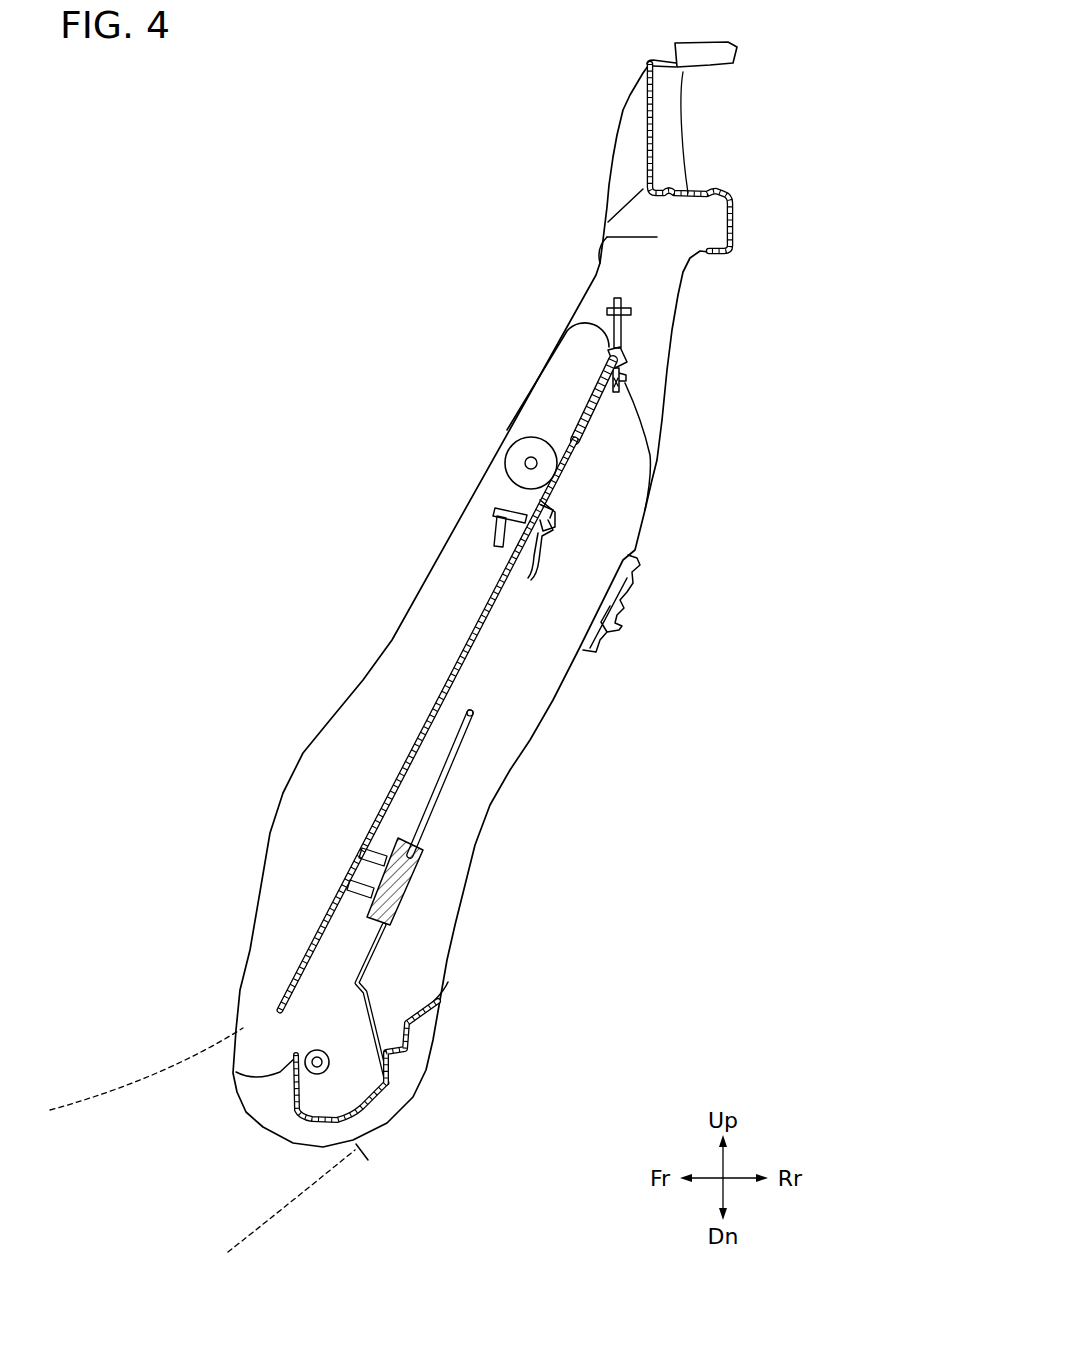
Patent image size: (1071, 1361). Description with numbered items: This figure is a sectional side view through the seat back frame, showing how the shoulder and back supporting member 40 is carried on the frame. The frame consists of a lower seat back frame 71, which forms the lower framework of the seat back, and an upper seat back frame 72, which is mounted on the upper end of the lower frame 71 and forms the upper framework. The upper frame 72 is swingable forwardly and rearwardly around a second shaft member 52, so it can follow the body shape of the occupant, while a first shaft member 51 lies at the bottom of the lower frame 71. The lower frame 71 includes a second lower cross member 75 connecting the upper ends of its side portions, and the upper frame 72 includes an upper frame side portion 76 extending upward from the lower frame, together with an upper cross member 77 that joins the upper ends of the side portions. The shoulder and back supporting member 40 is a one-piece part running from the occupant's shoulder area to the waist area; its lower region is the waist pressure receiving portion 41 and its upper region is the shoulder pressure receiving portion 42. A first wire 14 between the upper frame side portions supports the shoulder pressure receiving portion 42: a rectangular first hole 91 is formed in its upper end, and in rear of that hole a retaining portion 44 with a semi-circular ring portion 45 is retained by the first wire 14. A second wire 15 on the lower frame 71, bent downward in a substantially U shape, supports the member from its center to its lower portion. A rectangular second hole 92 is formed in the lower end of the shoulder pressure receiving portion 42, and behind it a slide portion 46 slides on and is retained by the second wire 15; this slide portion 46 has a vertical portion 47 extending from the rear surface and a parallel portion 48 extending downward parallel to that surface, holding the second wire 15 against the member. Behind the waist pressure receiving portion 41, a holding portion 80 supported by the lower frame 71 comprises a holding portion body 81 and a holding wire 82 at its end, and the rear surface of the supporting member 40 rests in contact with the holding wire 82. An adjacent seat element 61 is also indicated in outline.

The first wire 14 is at (623, 333).
The second wire 15 is at (493, 532).
The shoulder and back supporting member 40 is at (413, 671).
The waist pressure receiving portion 41 is at (380, 763).
The shoulder pressure receiving portion 42 is at (568, 405).
The retaining portion 44 is at (645, 363).
The ring portion 45 is at (623, 387).
The slide portion 46 is at (671, 498).
The vertical portion 47 is at (548, 508).
The parallel portion 48 is at (560, 540).
The first shaft member 51 is at (317, 1050).
The second shaft member 52 is at (515, 457).
The seat frame 61 is at (147, 1083).
The lower seat back frame 71 is at (291, 851).
The upper seat back frame 72 is at (601, 152).
The second lower cross member 75 is at (633, 590).
The upper frame side portion 76 is at (567, 224).
The upper cross member 77 is at (630, 118).
The holding portion 80 is at (471, 960).
The holding portion body 81 is at (400, 880).
The holding wire 82 is at (355, 915).
The first hole 91 is at (597, 375).
The second hole 92 is at (527, 548).